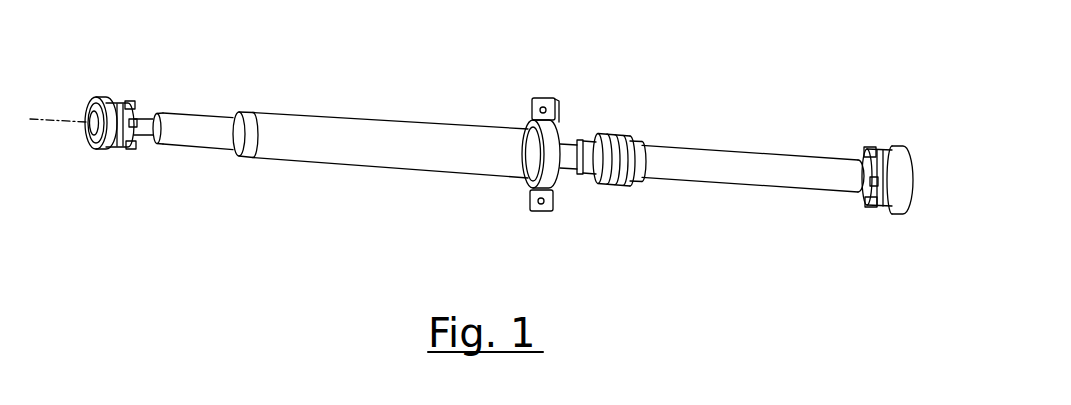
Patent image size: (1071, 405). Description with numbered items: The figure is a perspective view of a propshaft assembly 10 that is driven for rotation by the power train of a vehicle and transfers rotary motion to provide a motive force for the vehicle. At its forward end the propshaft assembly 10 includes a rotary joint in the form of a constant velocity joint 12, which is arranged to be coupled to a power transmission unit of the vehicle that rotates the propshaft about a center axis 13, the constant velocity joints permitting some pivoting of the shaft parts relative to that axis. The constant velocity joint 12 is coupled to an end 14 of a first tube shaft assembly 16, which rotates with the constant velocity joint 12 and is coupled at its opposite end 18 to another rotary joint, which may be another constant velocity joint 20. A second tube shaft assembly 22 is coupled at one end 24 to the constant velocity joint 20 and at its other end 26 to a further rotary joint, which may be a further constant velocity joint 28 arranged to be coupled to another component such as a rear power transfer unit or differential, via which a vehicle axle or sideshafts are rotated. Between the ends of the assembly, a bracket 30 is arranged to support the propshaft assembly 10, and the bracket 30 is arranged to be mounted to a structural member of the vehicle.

The propshaft assembly 10 is at (758, 68).
The constant velocity joint 12 is at (107, 93).
The center axis 13 is at (70, 119).
The end 14 is at (148, 120).
The first tube shaft assembly 16 is at (270, 123).
The opposite end 18 is at (567, 144).
The constant velocity joint 20 is at (597, 133).
The second tube shaft assembly 22 is at (667, 152).
The end 24 is at (632, 172).
The other end 26 is at (858, 202).
The constant velocity joint 28 is at (880, 148).
The bracket 30 is at (536, 88).